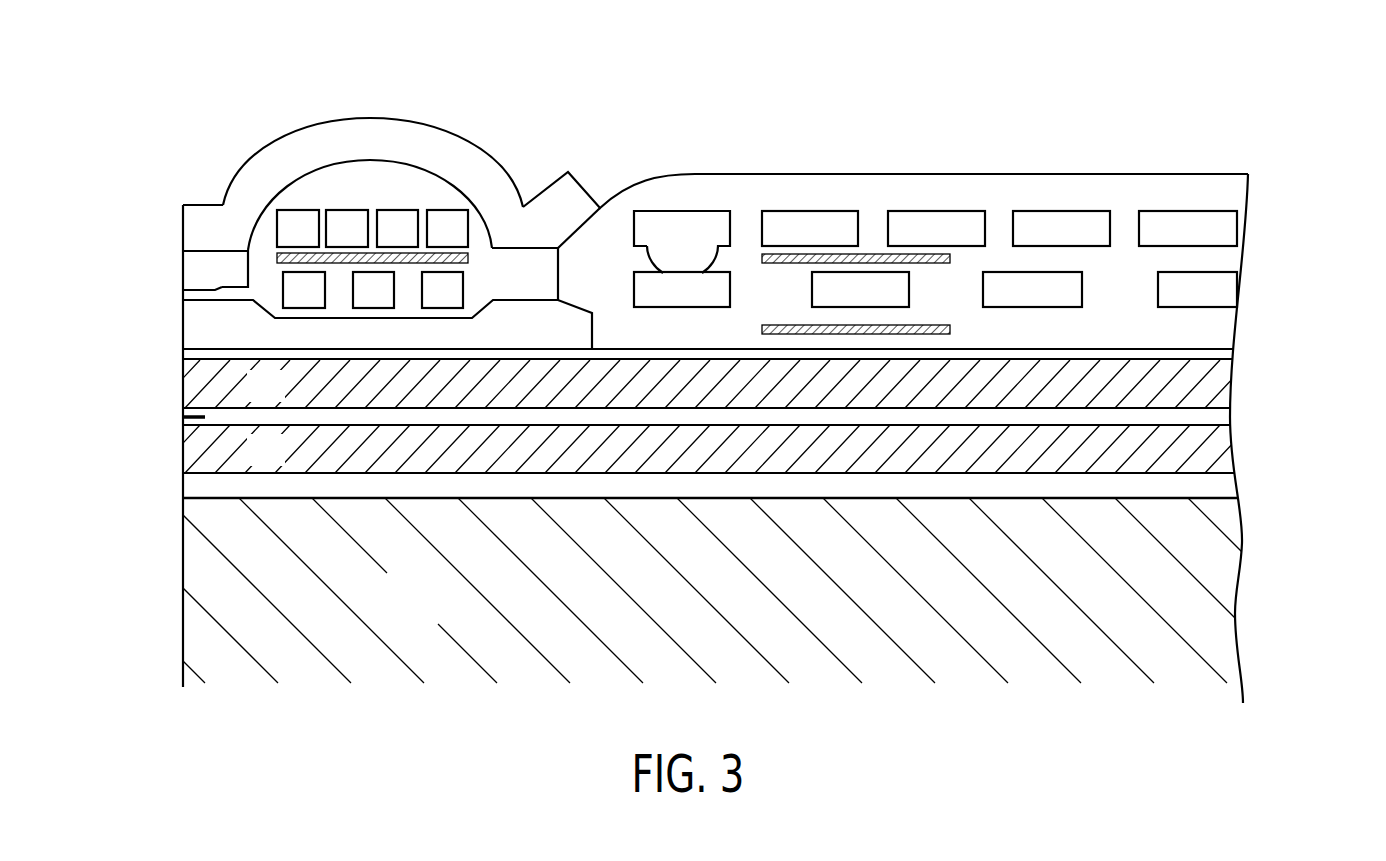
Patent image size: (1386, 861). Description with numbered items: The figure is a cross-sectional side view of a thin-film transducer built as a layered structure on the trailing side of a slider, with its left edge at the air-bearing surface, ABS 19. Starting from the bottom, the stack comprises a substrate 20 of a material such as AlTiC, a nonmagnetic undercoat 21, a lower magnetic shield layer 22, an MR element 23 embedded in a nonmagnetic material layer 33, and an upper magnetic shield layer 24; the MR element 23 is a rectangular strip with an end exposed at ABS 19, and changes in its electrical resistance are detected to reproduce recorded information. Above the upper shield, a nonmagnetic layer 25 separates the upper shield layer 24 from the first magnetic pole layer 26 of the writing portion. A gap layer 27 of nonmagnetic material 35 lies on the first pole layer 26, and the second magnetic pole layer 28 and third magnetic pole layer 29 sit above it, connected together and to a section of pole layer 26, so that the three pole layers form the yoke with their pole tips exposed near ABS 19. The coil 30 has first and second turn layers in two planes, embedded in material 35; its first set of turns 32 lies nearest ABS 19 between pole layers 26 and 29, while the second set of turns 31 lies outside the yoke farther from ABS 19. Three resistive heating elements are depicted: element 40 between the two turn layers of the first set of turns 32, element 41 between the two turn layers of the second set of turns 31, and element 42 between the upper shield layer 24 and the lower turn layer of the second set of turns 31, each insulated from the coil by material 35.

The ABS 19 is at (183, 678).
The substrate 20 is at (428, 614).
The undercoat 21 is at (192, 487).
The lower (S1) magnetic shield layer 22 is at (183, 448).
The MR element 23 is at (183, 413).
The upper (S2) magnetic shield layer 24 is at (183, 383).
The nonmagnetic layer 25 is at (183, 353).
The first magnetic pole layer 26 is at (183, 323).
The gap layer 27 is at (183, 294).
The second magnetic pole layer 28 is at (183, 270).
The third magnetic pole layer 29 is at (183, 228).
The coil 30 is at (1217, 228).
The second set of turns 31 is at (625, 100).
The first set of turns 32 is at (252, 100).
The nonmagnetic material layer 33 is at (1223, 418).
The nonmagnetic material 35 is at (355, 200).
The resistive heating element 40 is at (278, 258).
The resistive heating element 41 is at (757, 257).
The resistive heating element 42 is at (950, 329).